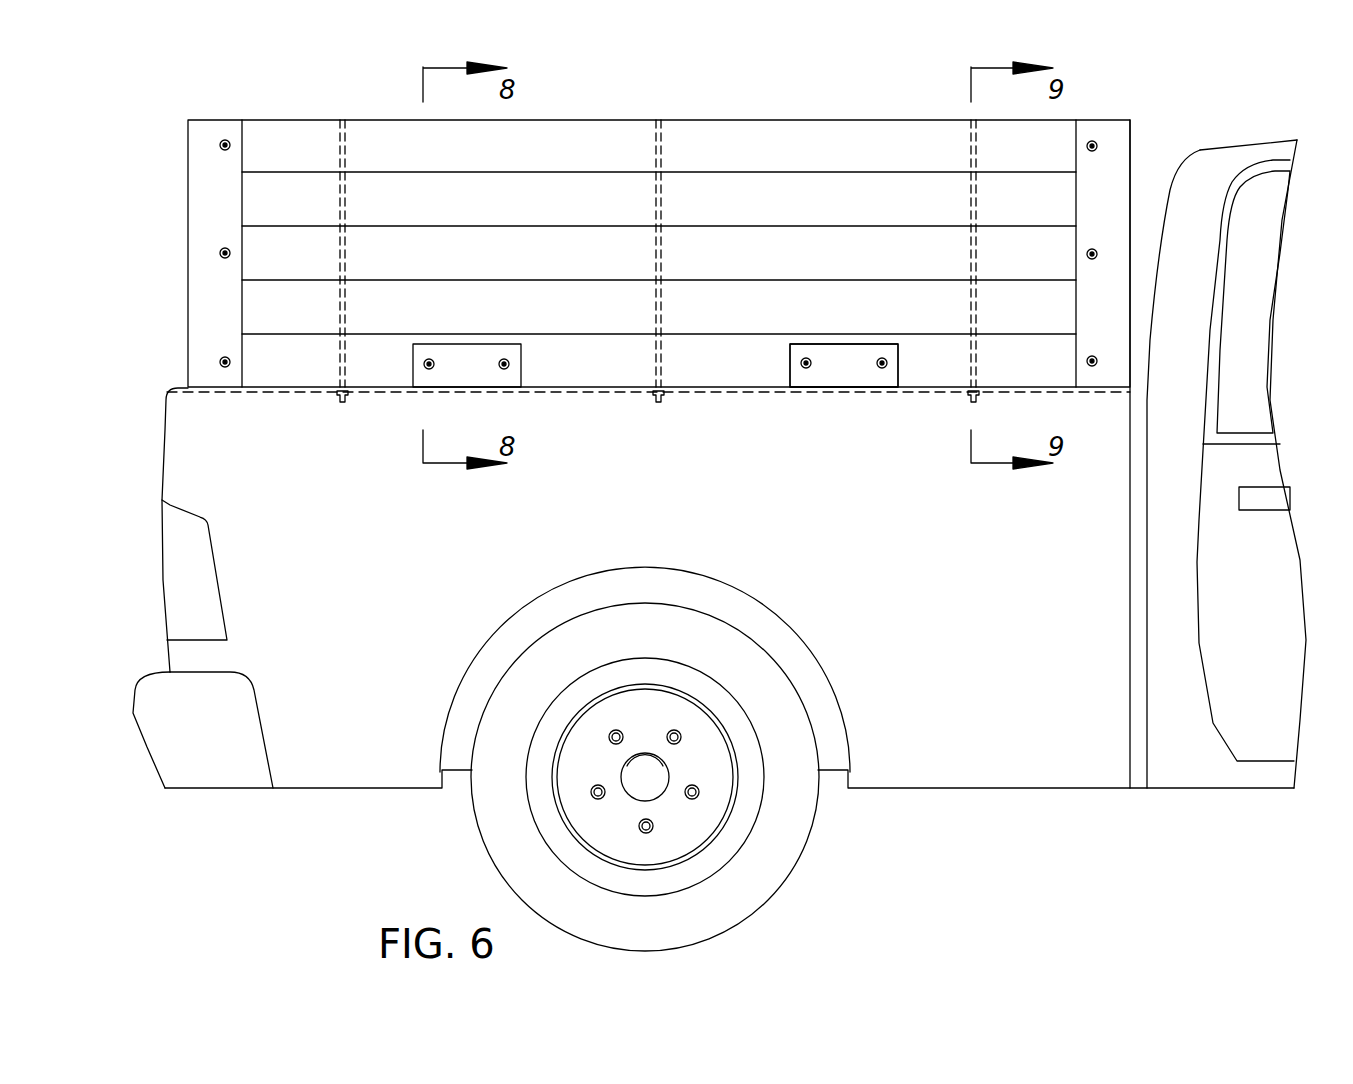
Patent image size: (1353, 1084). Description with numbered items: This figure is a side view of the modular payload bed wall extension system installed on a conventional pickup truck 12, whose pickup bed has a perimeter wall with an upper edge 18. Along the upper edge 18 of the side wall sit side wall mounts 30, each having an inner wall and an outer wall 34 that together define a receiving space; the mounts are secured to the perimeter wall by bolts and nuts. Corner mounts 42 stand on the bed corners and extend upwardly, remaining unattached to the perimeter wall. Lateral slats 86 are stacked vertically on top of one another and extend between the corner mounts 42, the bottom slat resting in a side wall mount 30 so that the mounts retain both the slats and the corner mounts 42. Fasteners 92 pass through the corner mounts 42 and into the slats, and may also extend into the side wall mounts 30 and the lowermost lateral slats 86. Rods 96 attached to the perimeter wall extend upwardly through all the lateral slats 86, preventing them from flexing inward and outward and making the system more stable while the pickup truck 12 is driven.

The pickup truck 12 is at (1177, 772).
The upper edge 18 is at (290, 387).
The side wall mount 30 is at (898, 375).
The outer wall 34 is at (845, 373).
The corner mount 42 is at (1130, 160).
The lateral slat 86 is at (833, 207).
The fastener 92 is at (225, 140).
The rod 96 is at (338, 156).